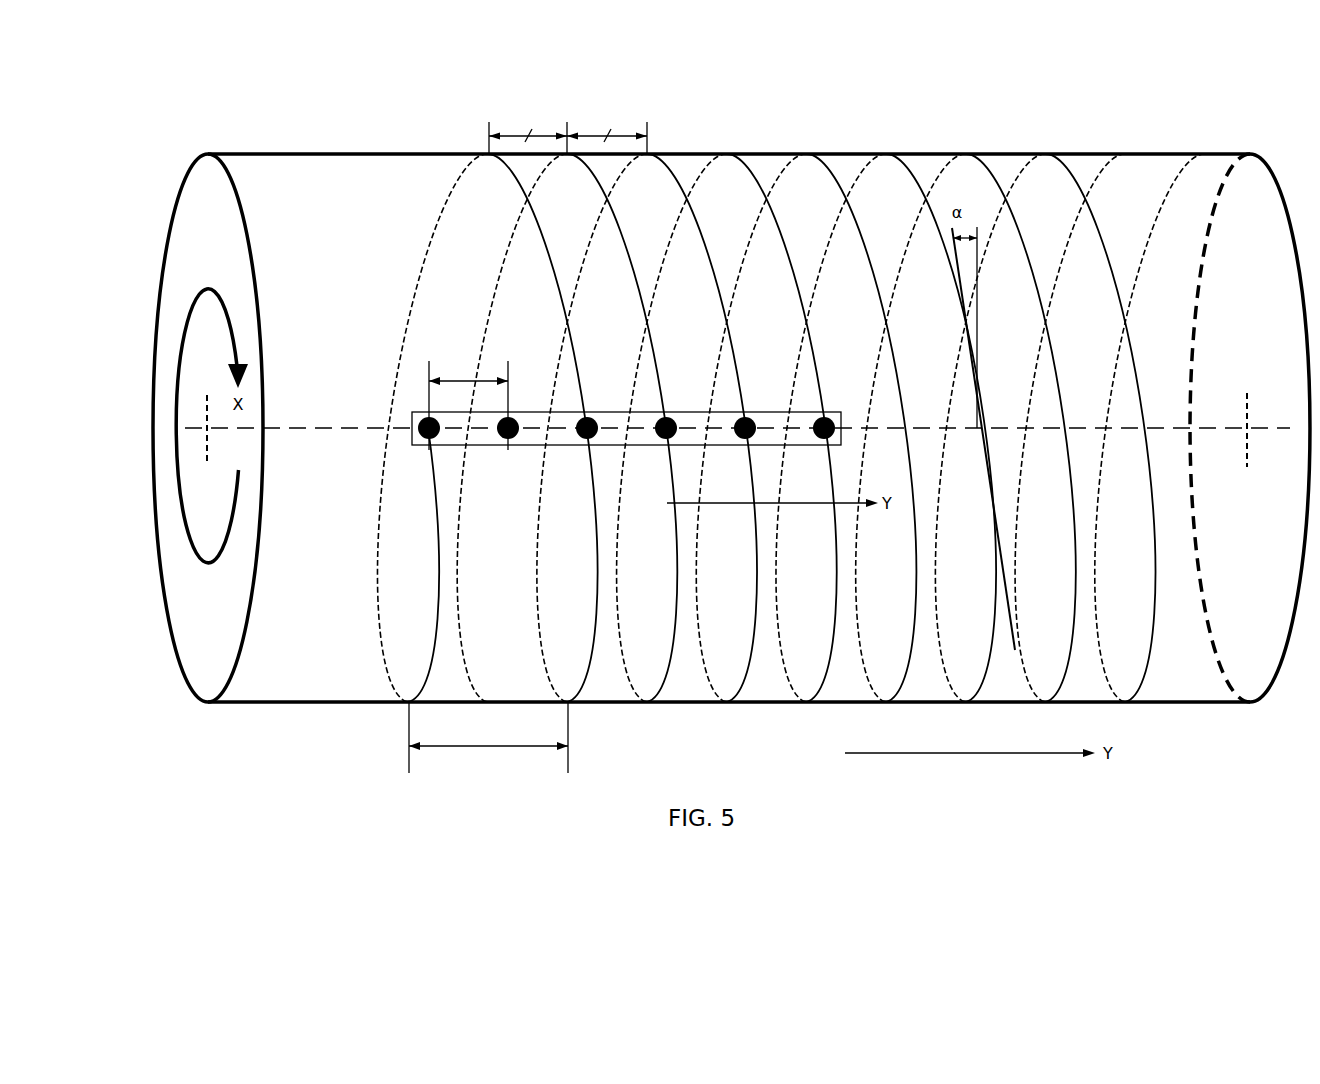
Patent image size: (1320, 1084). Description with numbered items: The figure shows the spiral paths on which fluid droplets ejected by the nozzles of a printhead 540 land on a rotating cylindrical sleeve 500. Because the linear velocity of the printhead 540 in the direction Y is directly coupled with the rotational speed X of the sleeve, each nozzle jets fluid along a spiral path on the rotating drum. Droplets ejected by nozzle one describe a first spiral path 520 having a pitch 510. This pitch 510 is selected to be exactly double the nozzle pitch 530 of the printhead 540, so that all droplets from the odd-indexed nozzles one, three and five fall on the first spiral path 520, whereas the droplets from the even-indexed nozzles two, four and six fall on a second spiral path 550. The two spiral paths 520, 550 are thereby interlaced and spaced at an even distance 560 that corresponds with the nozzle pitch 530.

The tubular body 500 is at (323, 245).
The pitch 510 is at (463, 747).
The spiral path 520 is at (387, 463).
The nozzle pitch 530 is at (458, 379).
The printhead 540 is at (843, 412).
The second spiral path 550 is at (465, 470).
The even distance 560 is at (518, 133).